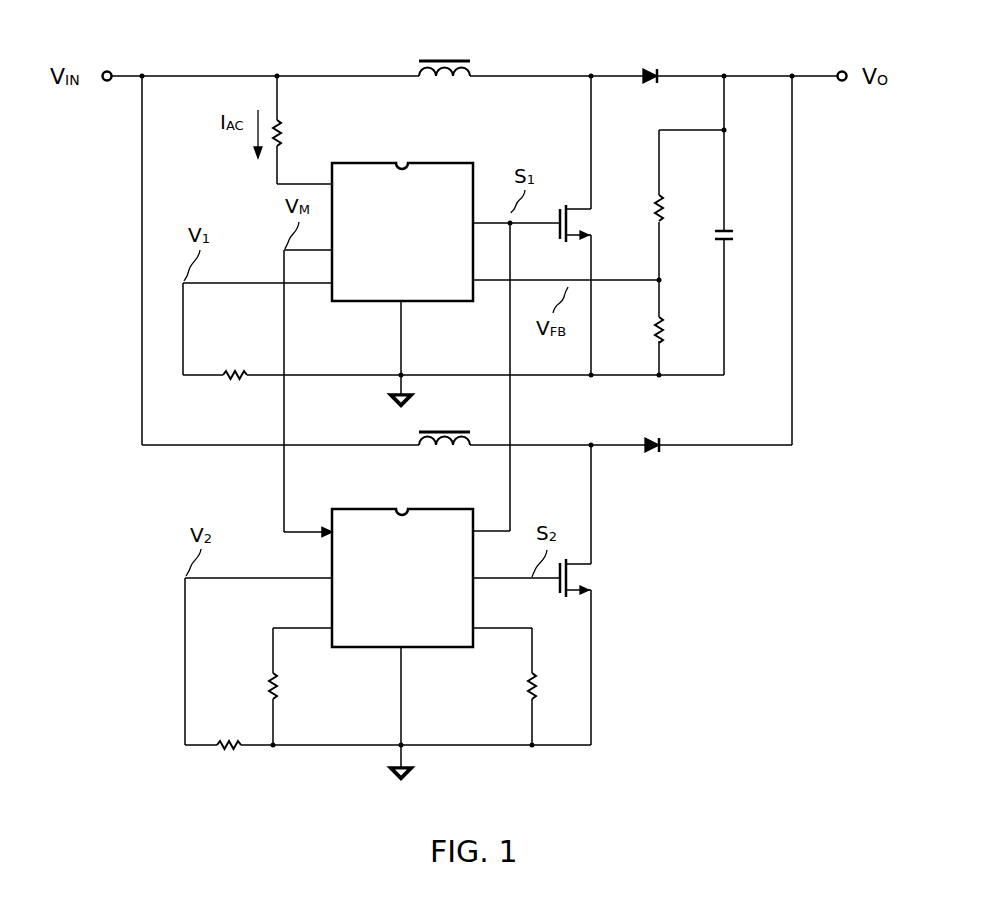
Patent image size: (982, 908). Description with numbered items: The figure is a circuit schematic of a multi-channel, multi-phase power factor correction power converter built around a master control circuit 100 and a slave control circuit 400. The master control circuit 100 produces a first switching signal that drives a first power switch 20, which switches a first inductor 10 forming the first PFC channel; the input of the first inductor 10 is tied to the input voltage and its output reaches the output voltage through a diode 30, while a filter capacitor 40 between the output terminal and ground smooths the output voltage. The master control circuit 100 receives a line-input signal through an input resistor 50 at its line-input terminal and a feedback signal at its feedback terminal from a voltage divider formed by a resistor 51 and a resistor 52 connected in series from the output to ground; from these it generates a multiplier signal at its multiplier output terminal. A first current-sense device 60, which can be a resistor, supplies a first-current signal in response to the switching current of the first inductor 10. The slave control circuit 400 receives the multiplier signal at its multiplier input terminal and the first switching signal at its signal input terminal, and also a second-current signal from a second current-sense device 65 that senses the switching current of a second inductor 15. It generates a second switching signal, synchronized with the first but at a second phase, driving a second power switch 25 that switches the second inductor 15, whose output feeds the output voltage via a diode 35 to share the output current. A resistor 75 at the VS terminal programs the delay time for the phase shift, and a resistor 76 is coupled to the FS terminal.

The first inductor 10 is at (444, 53).
The second inductor 15 is at (444, 424).
The first power switch 20 is at (590, 223).
The second power switch 25 is at (590, 578).
The diode 30 is at (650, 63).
The diode 35 is at (652, 432).
The filter capacitor 40 is at (741, 236).
The input resistor 50 is at (294, 133).
The resistor 51 is at (677, 208).
The resistor 52 is at (675, 330).
The first current-sense device 60 is at (234, 361).
The second current-sense device 65 is at (228, 761).
The resistor 75 is at (254, 686).
The resistor 76 is at (549, 686).
The master control circuit 100 is at (402, 219).
The slave control circuit 400 is at (402, 565).